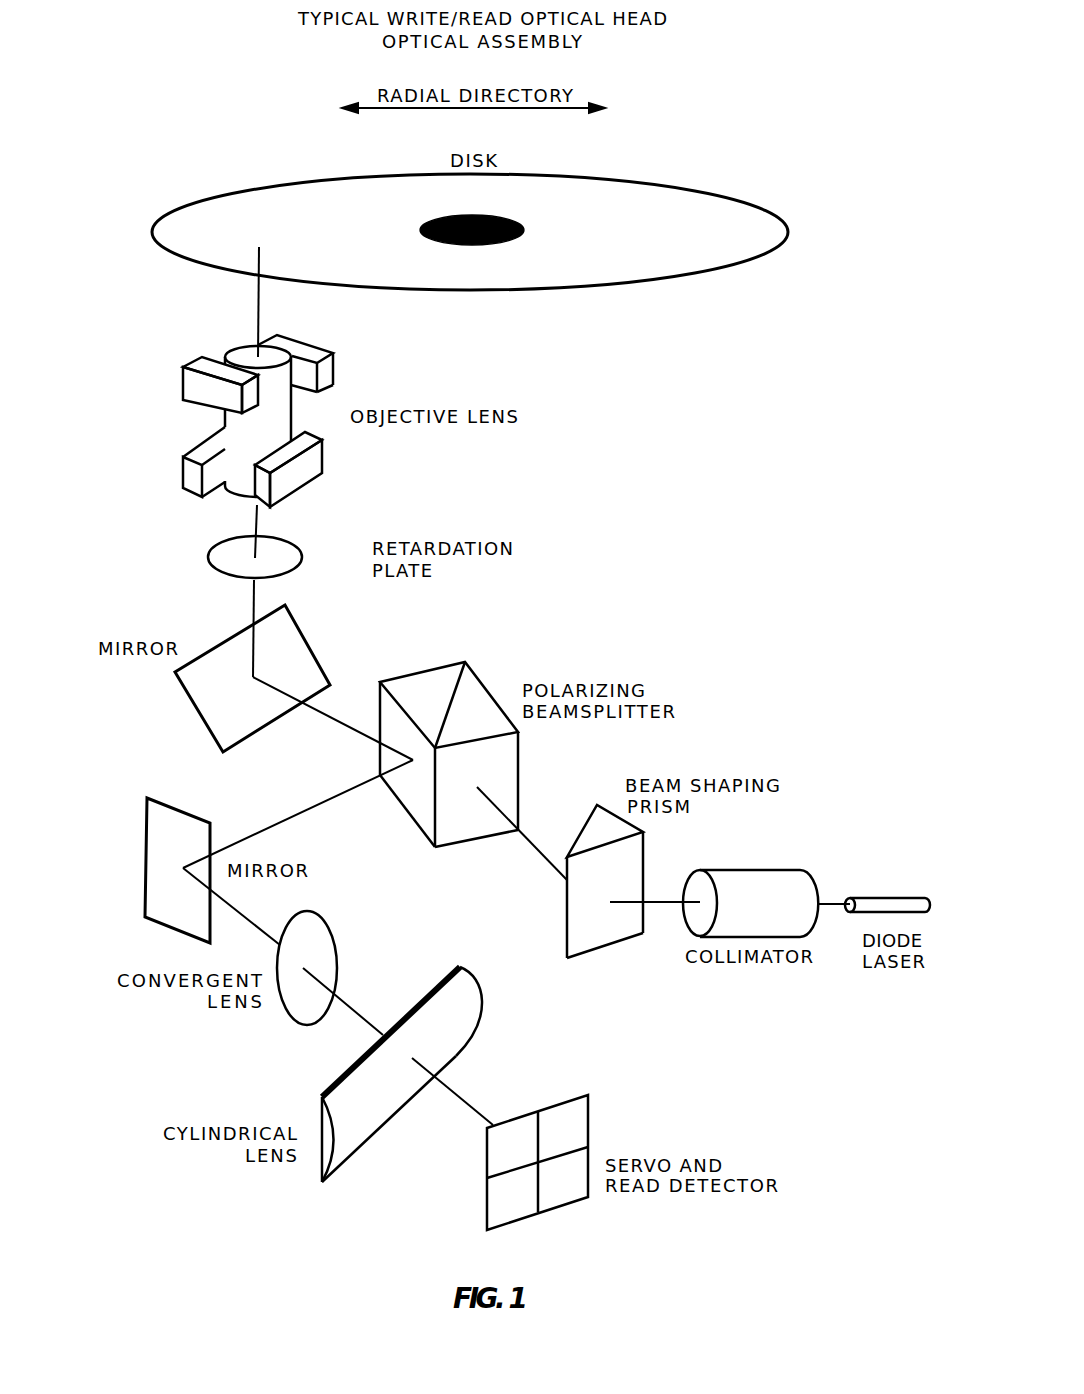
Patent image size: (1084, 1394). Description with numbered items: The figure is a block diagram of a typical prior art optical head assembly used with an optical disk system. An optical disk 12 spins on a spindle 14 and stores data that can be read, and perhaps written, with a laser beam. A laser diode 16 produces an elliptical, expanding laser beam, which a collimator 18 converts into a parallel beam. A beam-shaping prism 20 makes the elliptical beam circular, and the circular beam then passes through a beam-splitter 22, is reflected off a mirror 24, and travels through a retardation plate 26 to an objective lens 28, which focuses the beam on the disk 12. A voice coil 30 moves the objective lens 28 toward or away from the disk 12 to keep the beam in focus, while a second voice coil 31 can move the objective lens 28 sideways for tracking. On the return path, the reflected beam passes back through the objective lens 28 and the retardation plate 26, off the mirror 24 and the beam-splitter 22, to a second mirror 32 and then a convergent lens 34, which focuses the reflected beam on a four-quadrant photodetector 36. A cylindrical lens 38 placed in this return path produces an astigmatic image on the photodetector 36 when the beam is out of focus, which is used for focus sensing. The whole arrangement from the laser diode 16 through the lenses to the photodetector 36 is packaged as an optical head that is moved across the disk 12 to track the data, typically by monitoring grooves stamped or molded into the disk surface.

The optical disk 12 is at (613, 195).
The spindle 14 is at (487, 214).
The laser diode 16 is at (870, 898).
The collimator 18 is at (758, 868).
The beam-shaping prism 20 is at (565, 902).
The beam-splitter 22 is at (427, 665).
The mirror 24 is at (305, 633).
The retardation plate 26 is at (302, 557).
The objective lens 28 is at (238, 345).
The voice coil 30 is at (335, 372).
The second voice coil 31 is at (183, 468).
The second mirror 32 is at (145, 900).
The convergent lens 34 is at (335, 940).
The four-quadrant photodetector 36 is at (590, 1103).
The cylindrical lens 38 is at (475, 1005).